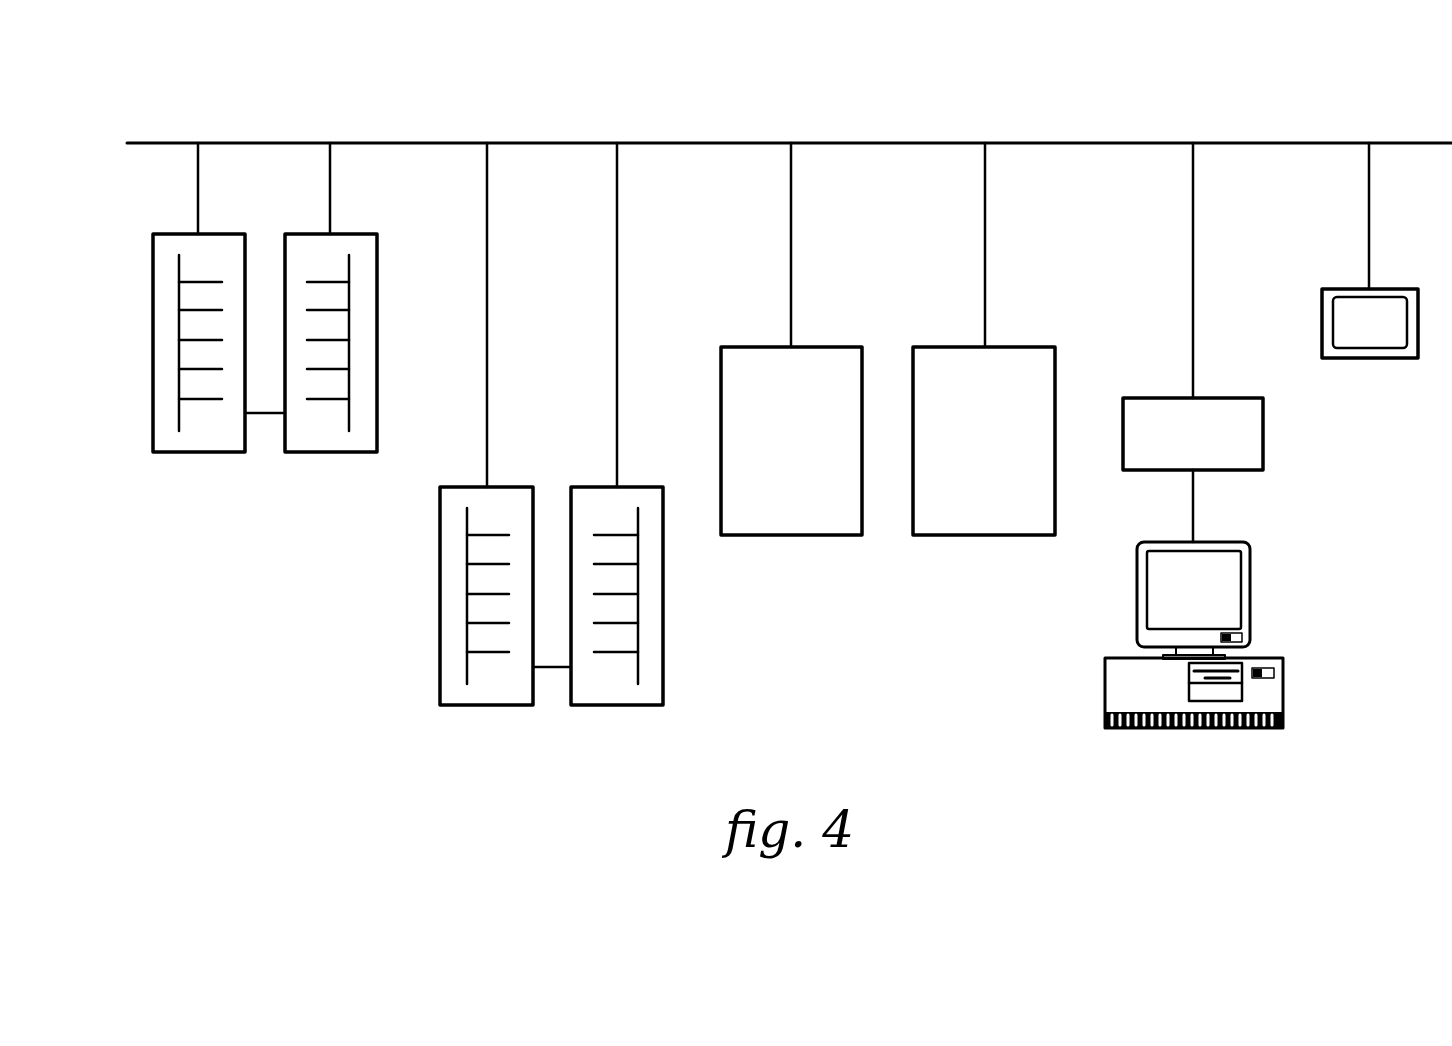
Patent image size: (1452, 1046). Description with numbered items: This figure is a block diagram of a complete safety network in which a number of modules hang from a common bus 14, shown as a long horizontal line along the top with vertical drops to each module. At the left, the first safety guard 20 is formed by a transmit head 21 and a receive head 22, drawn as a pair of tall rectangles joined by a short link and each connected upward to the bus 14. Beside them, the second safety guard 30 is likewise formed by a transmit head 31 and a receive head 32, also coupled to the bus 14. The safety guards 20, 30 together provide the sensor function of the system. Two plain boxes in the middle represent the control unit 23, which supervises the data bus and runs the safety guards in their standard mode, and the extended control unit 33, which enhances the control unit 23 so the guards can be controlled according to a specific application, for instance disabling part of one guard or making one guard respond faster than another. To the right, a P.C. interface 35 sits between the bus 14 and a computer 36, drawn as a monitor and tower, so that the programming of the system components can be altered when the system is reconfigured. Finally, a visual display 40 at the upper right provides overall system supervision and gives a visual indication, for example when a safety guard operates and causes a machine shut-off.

The network bus 14 is at (667, 142).
The first safety guard 20 is at (265, 437).
The transmit head 21 is at (190, 452).
The receive head 22 is at (330, 452).
The control unit 23 is at (958, 537).
The second safety guard 30 is at (551, 688).
The transmit head 31 is at (475, 705).
The receive head 32 is at (615, 705).
The extended control unit 33 is at (818, 537).
The P.C. interface 35 is at (1143, 398).
The computer 36 is at (1250, 600).
The visual display 40 is at (1333, 288).